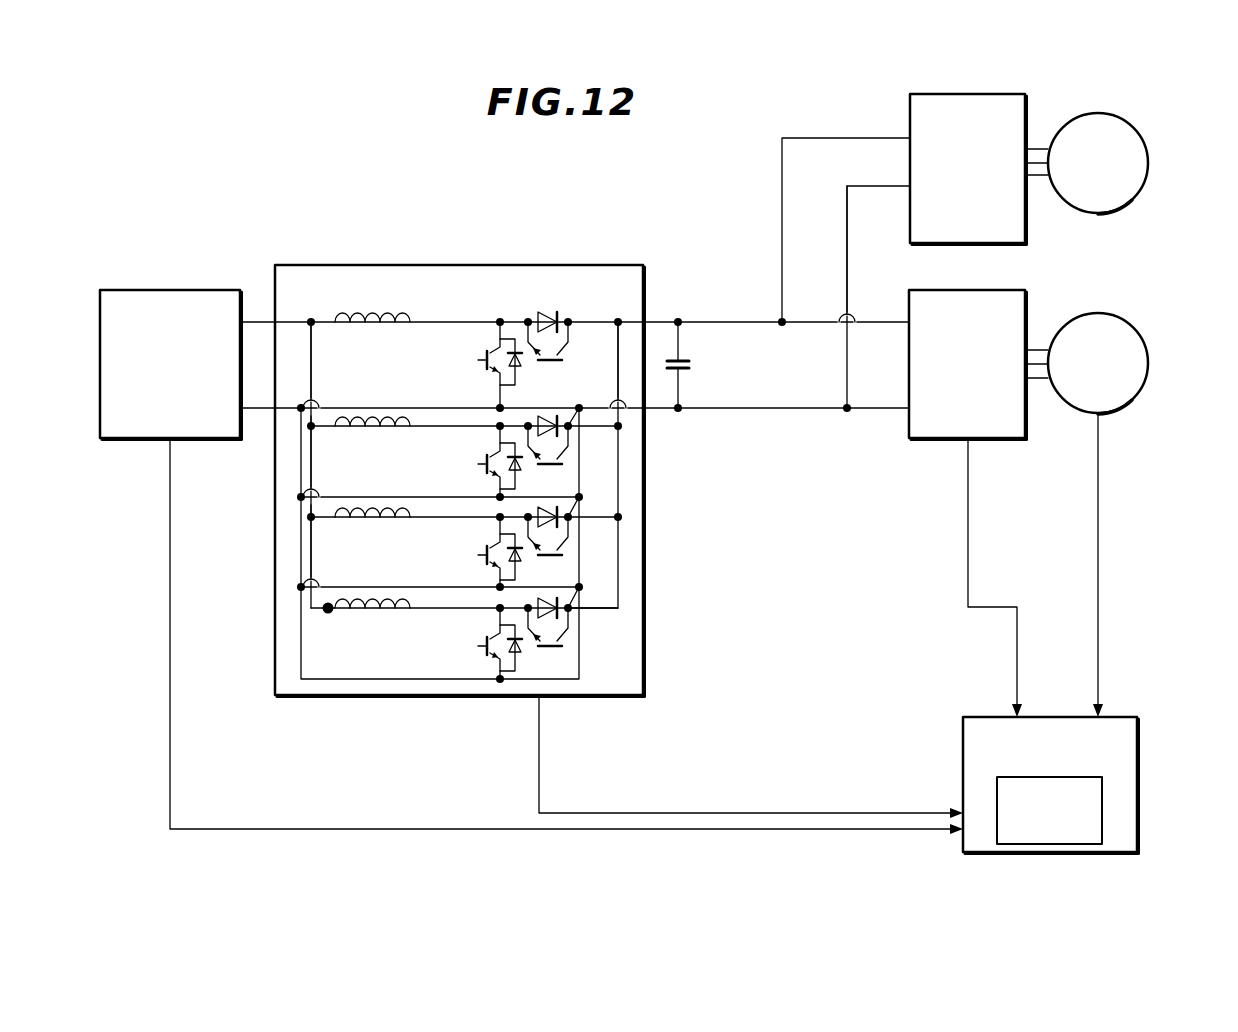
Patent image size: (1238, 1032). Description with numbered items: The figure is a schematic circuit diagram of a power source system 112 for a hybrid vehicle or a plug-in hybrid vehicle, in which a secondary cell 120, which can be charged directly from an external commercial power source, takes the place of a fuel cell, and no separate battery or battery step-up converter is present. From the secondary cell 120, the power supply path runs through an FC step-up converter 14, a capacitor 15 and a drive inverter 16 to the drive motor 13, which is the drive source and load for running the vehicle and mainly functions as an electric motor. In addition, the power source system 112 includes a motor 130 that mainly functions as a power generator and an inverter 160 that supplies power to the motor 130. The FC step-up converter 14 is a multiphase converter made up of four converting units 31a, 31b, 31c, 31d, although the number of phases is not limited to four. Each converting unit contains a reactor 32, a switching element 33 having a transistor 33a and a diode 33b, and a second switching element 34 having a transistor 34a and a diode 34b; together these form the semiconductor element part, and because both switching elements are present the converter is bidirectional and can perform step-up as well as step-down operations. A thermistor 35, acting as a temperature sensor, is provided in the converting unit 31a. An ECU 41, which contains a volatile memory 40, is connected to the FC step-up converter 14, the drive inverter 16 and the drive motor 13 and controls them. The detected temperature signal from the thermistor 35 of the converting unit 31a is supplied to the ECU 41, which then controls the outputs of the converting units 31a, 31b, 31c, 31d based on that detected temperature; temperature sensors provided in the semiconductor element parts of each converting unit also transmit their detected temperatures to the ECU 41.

The power source system 112 is at (1196, 185).
The secondary cell 120 is at (175, 290).
The FC step-up converter 14 is at (478, 265).
The capacitor 15 is at (684, 360).
The inverter 160 is at (910, 108).
The motor 130 is at (1122, 117).
The drive inverter 16 is at (995, 290).
The drive motor 13 is at (1118, 316).
The ECU 41 is at (1083, 754).
The volatile memory 40 is at (1102, 810).
The converting unit 31a is at (419, 690).
The converting unit 31b is at (307, 545).
The converting unit 31c is at (307, 462).
The converting unit 31d is at (295, 368).
The reactor 32 is at (380, 614).
The switching element 33 is at (484, 695).
The transistor 33a is at (495, 655).
The diode 33b is at (520, 655).
The second switching element 34 is at (584, 683).
The transistor 34a is at (553, 648).
The diode 34b is at (543, 624).
The thermistor 35 is at (328, 614).